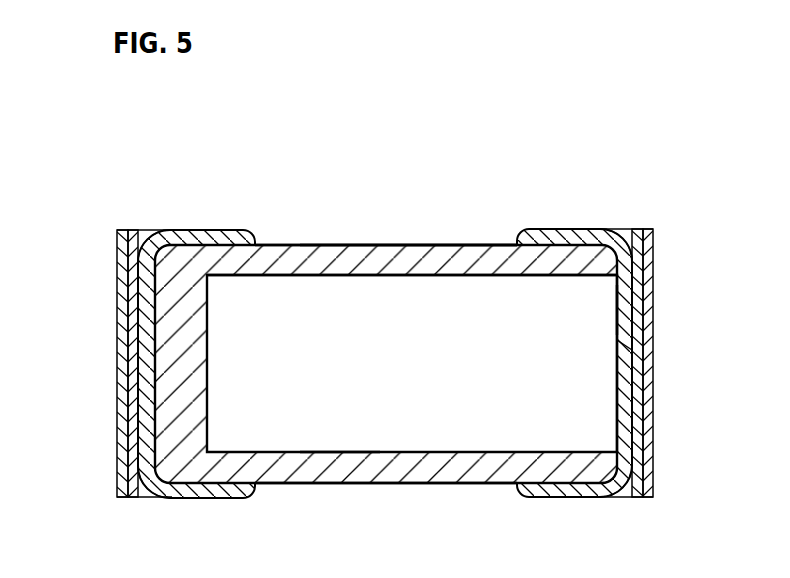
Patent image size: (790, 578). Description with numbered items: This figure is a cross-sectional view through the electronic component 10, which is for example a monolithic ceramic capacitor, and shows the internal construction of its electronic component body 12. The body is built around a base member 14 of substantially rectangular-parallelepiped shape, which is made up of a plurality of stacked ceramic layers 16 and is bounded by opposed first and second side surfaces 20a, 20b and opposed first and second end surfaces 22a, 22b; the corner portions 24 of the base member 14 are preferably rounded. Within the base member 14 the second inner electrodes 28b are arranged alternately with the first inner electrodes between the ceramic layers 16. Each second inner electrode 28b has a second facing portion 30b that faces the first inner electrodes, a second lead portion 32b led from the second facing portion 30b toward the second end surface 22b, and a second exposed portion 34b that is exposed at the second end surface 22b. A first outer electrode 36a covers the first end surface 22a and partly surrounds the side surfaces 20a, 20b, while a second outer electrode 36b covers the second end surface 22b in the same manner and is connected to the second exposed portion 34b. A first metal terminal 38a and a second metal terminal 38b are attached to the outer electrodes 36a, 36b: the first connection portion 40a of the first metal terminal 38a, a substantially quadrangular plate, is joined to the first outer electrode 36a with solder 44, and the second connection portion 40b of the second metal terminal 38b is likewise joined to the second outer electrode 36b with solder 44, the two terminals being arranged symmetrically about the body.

The electronic component 10 is at (20, 148).
The electronic component body 12 is at (295, 246).
The base member 14 is at (366, 245).
The ceramic layers 16 is at (396, 260).
The first side surface 20a is at (478, 484).
The second side surface 20b is at (455, 244).
The first end surface 22a is at (150, 372).
The second end surface 22b is at (618, 368).
The corner portions 24 is at (153, 237).
The second inner electrodes 28b is at (334, 453).
The second facing portion 30b is at (412, 400).
The second lead portion 32b is at (596, 312).
The second exposed portion 34b is at (618, 345).
The first outer electrode 36a is at (218, 230).
The second outer electrode 36b is at (543, 228).
The first metal terminal 38a is at (117, 233).
The second metal terminal 38b is at (655, 232).
The first connection portion 40a is at (117, 287).
The second connection portion 40b is at (654, 283).
The solder 44 is at (133, 420).